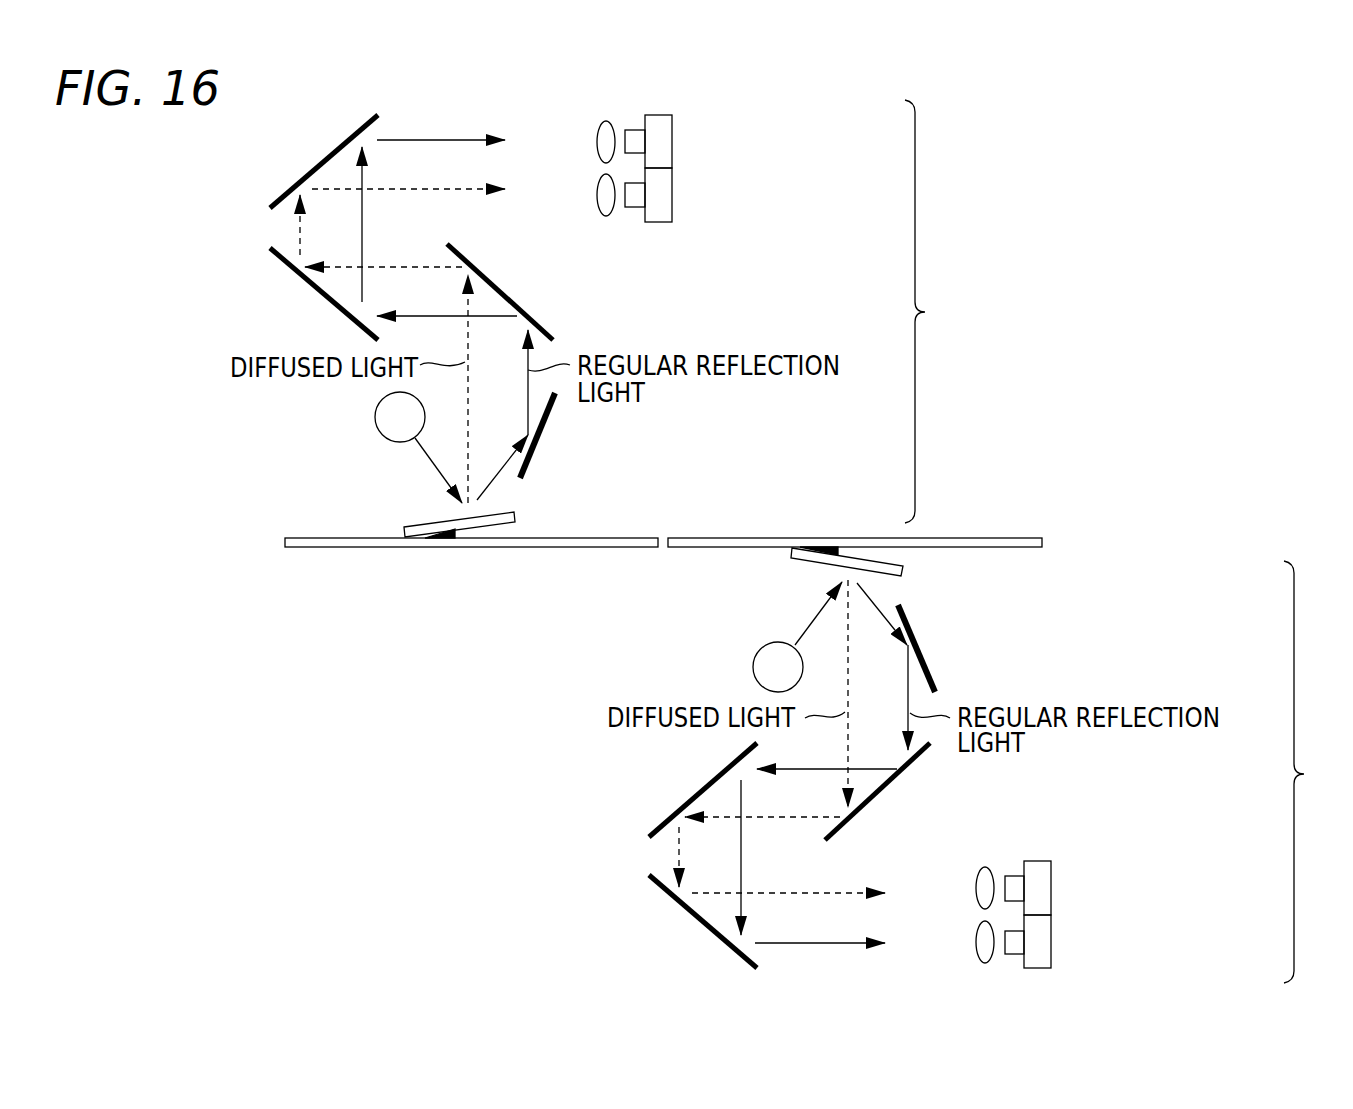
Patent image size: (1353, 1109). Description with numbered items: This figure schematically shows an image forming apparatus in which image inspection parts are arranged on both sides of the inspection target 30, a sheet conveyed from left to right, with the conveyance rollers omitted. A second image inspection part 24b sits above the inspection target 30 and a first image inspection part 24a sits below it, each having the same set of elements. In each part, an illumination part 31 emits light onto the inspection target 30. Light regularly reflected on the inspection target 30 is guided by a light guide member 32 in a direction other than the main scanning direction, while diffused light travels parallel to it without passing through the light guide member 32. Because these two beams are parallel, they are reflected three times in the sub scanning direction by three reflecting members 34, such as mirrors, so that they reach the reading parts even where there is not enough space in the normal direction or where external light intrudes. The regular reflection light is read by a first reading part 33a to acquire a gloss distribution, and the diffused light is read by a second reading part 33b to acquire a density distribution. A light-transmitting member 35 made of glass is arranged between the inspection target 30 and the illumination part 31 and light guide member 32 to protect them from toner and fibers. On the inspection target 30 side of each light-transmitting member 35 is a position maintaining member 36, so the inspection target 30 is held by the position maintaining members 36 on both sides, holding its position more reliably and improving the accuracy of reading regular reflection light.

The inspection target 30 is at (995, 540).
The illumination part 31 is at (385, 418).
The light guide member 32 is at (535, 438).
The first reading part 33a is at (660, 140).
The second reading part 33b is at (660, 193).
The reflecting member 34 is at (308, 170).
The light-transmitting member 35 is at (415, 523).
The position maintaining member 36 is at (437, 545).
The first image inspection part 24a is at (1318, 772).
The second image inspection part 24b is at (937, 311).